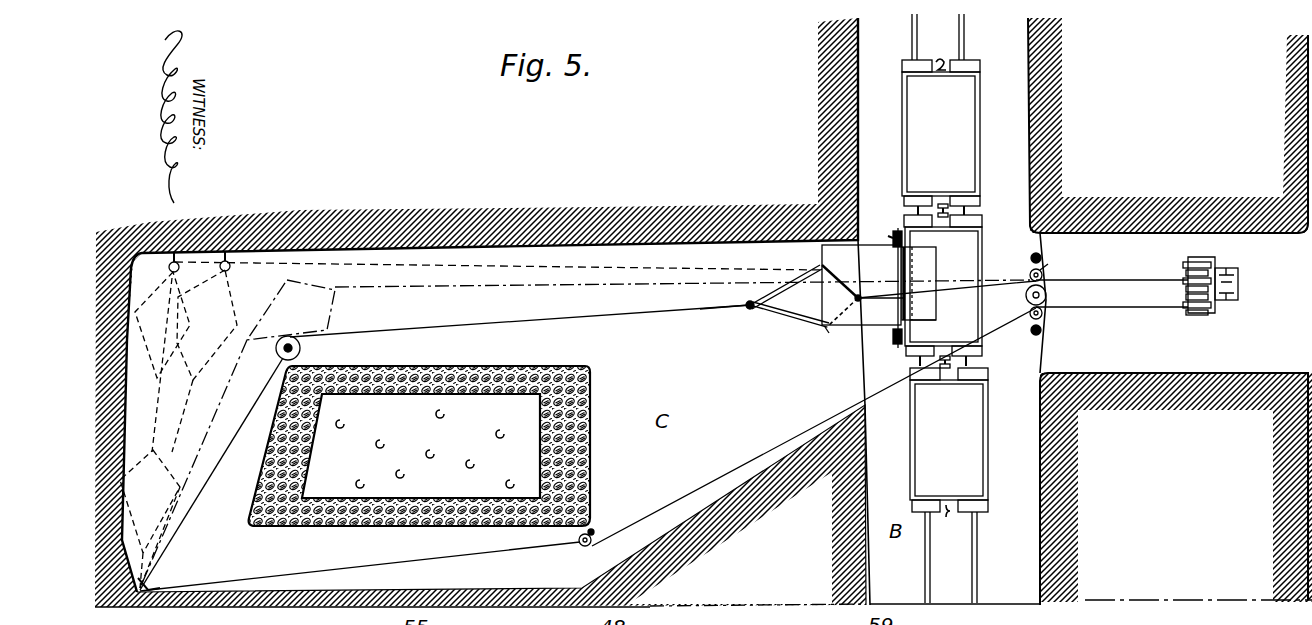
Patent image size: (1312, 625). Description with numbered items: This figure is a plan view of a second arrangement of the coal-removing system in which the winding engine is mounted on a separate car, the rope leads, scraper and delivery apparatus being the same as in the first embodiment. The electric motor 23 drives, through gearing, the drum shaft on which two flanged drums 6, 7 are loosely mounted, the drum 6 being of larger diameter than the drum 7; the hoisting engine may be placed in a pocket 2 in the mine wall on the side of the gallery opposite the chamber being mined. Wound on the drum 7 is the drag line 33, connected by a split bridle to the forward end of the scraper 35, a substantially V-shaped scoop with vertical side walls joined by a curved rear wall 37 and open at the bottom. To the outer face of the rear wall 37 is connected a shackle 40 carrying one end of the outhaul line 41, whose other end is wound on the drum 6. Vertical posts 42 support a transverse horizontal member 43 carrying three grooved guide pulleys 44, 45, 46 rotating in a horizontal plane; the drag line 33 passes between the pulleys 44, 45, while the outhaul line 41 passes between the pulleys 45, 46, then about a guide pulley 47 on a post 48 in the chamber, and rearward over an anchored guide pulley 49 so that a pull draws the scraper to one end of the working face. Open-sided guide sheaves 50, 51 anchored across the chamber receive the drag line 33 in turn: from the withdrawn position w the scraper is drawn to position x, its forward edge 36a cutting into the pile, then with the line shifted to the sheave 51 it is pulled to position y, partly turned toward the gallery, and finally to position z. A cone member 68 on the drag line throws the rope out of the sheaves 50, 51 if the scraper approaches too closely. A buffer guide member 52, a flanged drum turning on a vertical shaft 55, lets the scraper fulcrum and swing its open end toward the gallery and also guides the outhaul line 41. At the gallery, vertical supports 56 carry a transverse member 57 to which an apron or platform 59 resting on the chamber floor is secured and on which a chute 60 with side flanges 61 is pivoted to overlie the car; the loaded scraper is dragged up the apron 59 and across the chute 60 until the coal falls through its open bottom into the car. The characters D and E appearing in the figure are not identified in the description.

The guide sheave 50 is at (179, 270).
The guide sheave 51 is at (229, 270).
The buffer guide member 52 is at (300, 348).
The shaft 55 is at (283, 358).
The guide pulley 49 is at (140, 586).
The outhaul or receding line 41 is at (1106, 322).
The guide pulley 47 is at (578, 541).
The post 48 is at (593, 530).
The scraper 35 is at (787, 296).
The shackle 40 is at (749, 309).
The apron or platform 59 is at (862, 287).
The curved rear wall 37 is at (836, 318).
The forward edge 36a is at (826, 332).
The cone member 68 is at (866, 296).
The chute 60 is at (922, 268).
The side flanges 61 is at (930, 321).
The vertical supports 56 is at (890, 370).
The transverse member 57 is at (890, 236).
The vertical posts 42 is at (1024, 352).
The transverse horizontal member 43 is at (1030, 276).
The guide pulley 44 is at (1042, 268).
The guide pulley 45 is at (1046, 296).
The guide pulley 46 is at (1041, 317).
The hauling or drag line 33 is at (1108, 272).
The flanged drum 7 is at (1183, 274).
The flanged drum 6 is at (1186, 308).
The electric motor 23 is at (1238, 290).
The pocket 2 is at (941, 59).
The scraper position x is at (162, 362).
The scraper position y is at (207, 325).
The scraper position z is at (237, 434).
The scraper position w is at (156, 484).
The mine car D is at (995, 450).
The rail track E is at (966, 560).